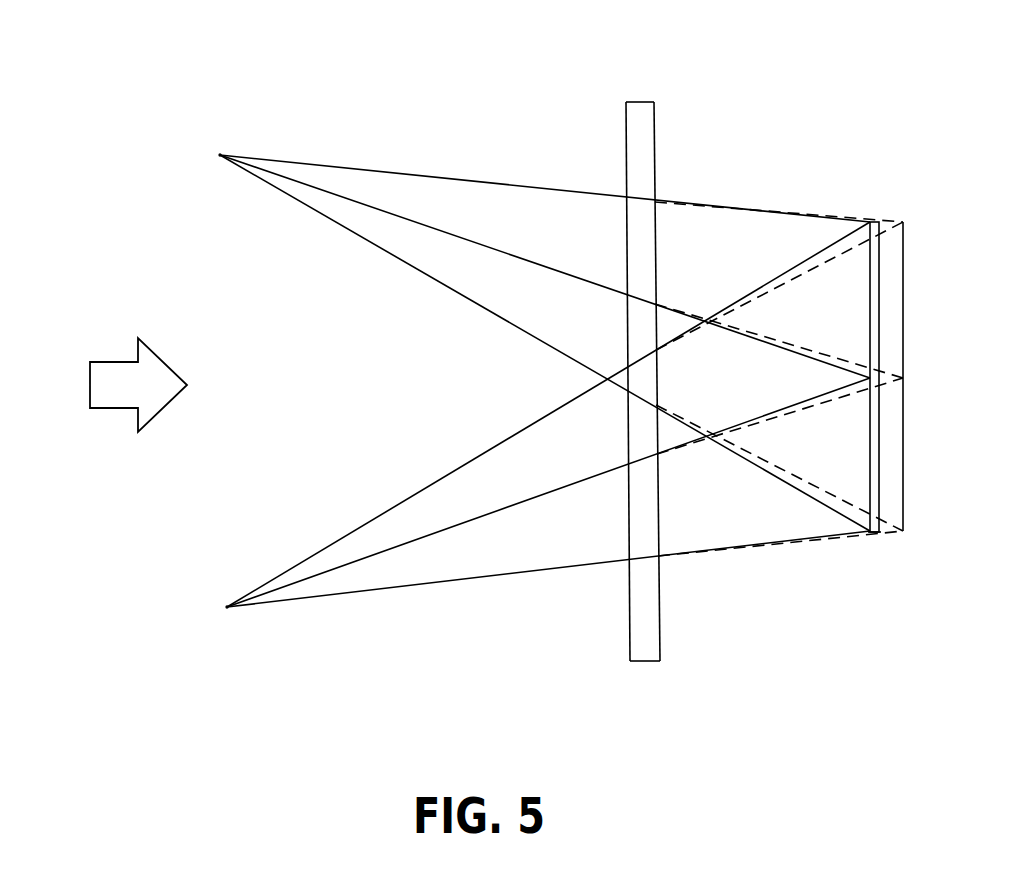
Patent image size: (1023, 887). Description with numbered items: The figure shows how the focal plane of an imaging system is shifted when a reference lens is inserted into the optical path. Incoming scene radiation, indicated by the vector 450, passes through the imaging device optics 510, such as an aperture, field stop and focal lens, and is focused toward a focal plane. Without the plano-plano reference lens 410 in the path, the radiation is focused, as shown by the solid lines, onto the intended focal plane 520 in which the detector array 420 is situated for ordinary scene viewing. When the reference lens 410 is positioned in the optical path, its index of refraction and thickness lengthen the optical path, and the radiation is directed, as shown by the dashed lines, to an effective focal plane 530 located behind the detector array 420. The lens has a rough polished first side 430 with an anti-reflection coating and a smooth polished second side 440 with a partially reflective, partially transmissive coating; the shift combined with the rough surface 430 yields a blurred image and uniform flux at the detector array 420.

The plano-plano reference lens 410 is at (645, 101).
The detector array 420 is at (873, 222).
The first side of the reference lens 430 is at (630, 633).
The second side of the reference lens 440 is at (660, 633).
The incoming scene radiation vector 450 is at (107, 362).
The imaging device optics 510 is at (220, 155).
The intended focal plane 520 is at (877, 532).
The effective focal plane 530 is at (903, 358).